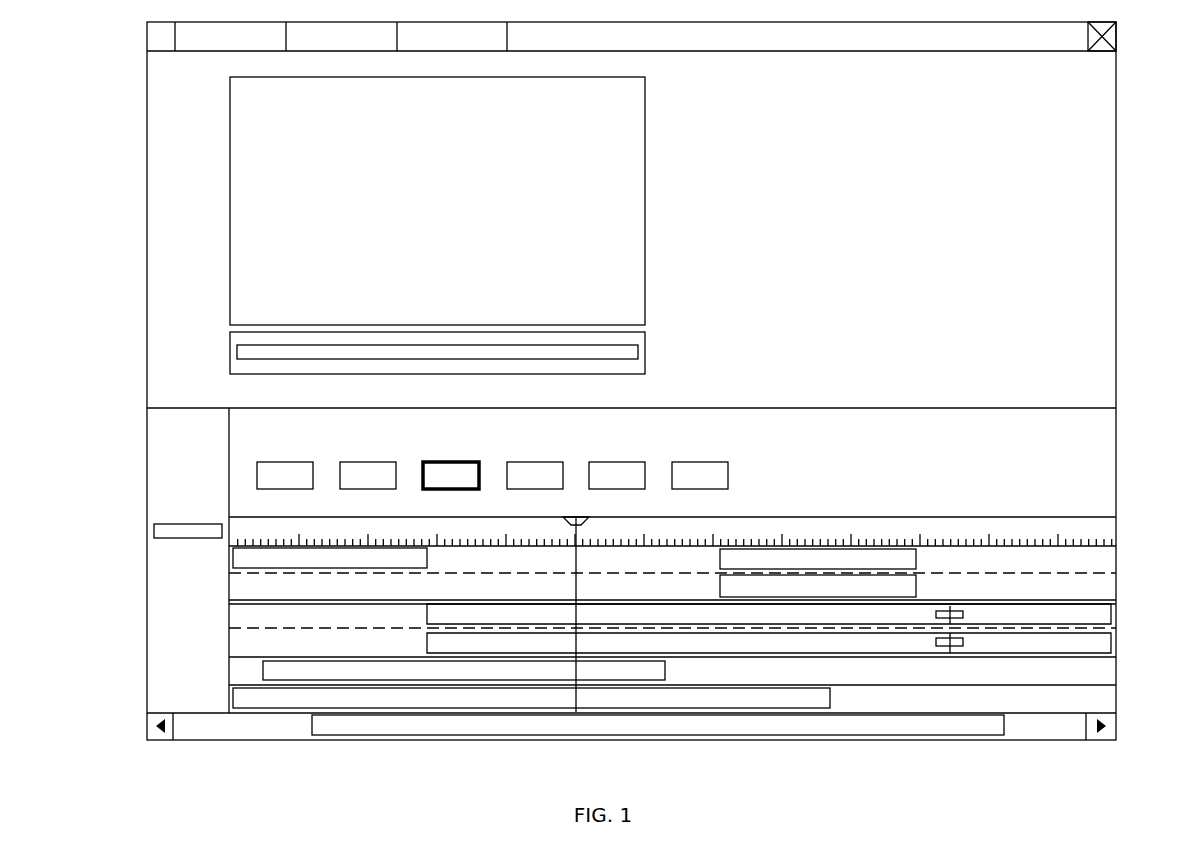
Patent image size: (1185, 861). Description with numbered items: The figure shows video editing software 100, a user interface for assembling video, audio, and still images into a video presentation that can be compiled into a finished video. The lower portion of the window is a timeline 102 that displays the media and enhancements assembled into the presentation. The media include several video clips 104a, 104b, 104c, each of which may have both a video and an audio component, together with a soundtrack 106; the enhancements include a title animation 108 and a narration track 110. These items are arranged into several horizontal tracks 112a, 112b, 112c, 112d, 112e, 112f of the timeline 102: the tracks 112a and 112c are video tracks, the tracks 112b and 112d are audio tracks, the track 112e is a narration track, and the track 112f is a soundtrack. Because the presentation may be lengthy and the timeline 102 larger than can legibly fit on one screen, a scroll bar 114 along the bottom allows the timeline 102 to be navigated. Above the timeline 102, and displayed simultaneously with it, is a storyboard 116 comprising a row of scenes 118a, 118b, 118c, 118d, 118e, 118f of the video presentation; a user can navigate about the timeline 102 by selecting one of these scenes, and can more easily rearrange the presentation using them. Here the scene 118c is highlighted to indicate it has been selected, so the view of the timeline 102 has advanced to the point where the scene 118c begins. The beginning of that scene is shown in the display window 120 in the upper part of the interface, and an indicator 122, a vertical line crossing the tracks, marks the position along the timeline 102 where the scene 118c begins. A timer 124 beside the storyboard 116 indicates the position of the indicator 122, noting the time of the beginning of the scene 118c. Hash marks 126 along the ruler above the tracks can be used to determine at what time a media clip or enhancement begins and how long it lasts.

The video editing software 100 is at (110, 58).
The timeline 102 is at (132, 548).
The video clip 104a is at (427, 646).
The video clip 104b is at (1072, 645).
The video clip 104c is at (720, 590).
The soundtrack 106 is at (831, 697).
The title animation 108 is at (428, 563).
The narration track 110 is at (666, 670).
The track 112a is at (1117, 562).
The track 112b is at (1117, 590).
The track 112c is at (1117, 616).
The track 112d is at (1117, 644).
The track 112e is at (1117, 671).
The track 112f is at (1117, 699).
The scroll bar 114 is at (472, 723).
The storyboard 116 is at (132, 409).
The scene 118a is at (290, 462).
The scene 118b is at (373, 462).
The scene 118c is at (456, 462).
The scene 118d is at (540, 462).
The scene 118e is at (622, 462).
The scene 118f is at (705, 462).
The display window 120 is at (646, 221).
The indicator 122 is at (578, 591).
The timer 124 is at (192, 524).
The hash marks 126 is at (675, 538).